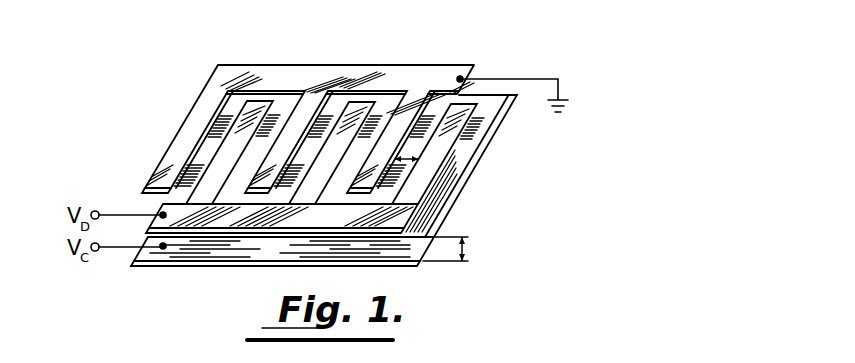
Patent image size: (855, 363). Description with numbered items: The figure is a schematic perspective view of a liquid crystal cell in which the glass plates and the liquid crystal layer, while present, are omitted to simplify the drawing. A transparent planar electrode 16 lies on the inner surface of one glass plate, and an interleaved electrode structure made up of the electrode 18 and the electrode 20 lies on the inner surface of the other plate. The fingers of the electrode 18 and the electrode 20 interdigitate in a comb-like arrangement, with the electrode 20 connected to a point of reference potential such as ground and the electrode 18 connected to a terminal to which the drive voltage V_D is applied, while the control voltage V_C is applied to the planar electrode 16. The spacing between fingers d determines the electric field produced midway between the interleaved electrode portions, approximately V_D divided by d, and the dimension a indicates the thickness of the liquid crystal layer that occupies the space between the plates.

The transparent planar electrode 16 is at (437, 201).
The interleaved electrode 18 is at (436, 159).
The interleaved electrode 20 is at (210, 84).
The spacing between fingers d is at (420, 159).
The thickness of liquid crystal layer a is at (463, 250).